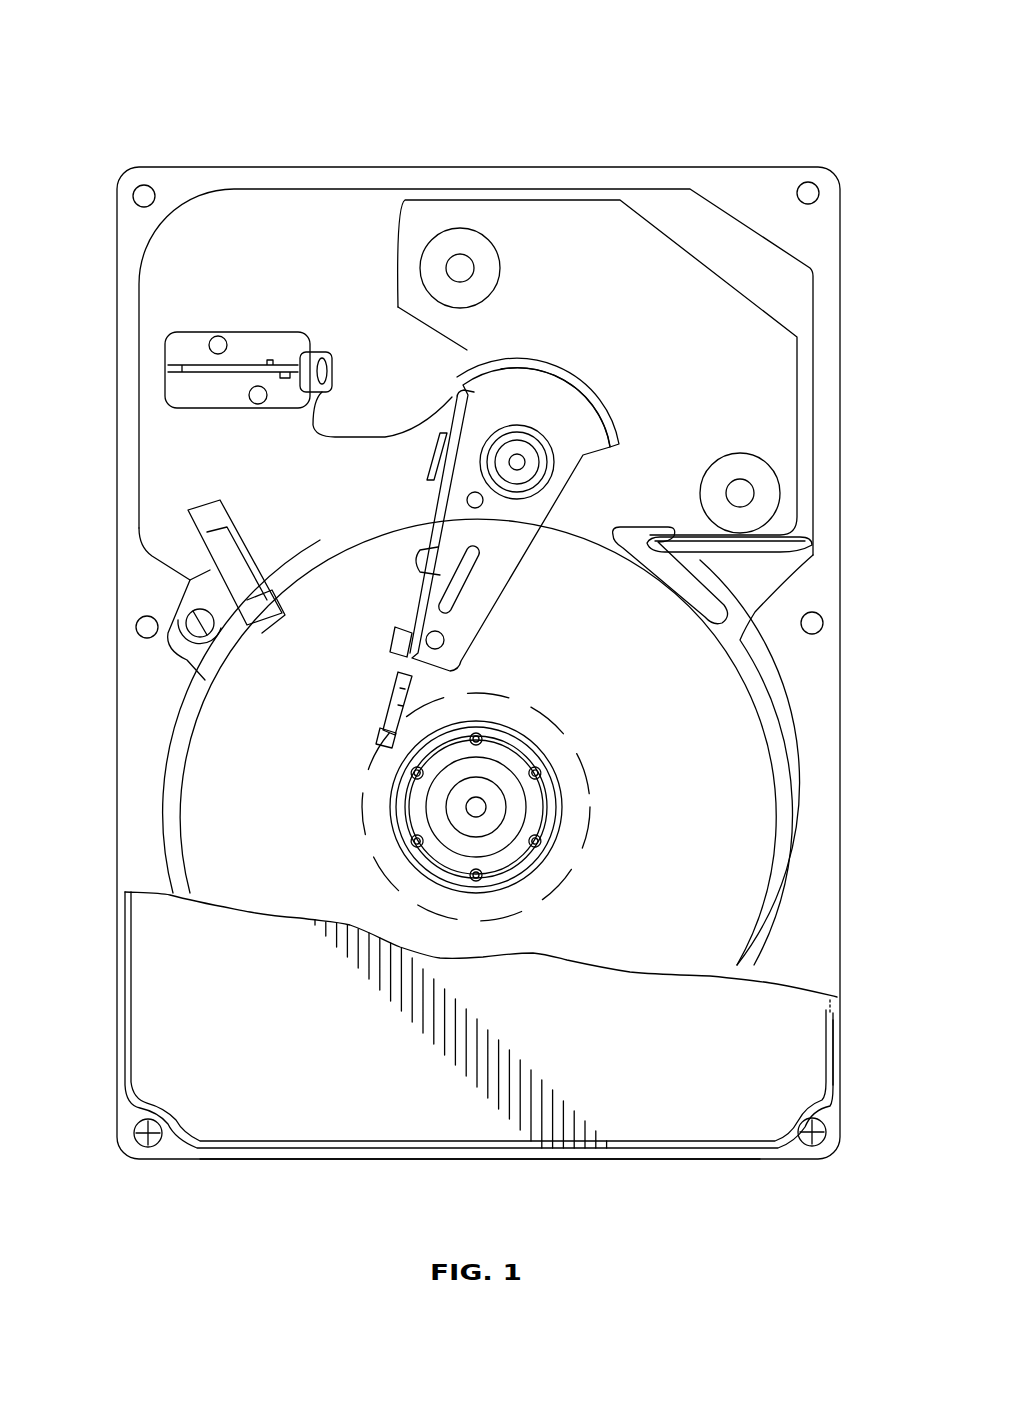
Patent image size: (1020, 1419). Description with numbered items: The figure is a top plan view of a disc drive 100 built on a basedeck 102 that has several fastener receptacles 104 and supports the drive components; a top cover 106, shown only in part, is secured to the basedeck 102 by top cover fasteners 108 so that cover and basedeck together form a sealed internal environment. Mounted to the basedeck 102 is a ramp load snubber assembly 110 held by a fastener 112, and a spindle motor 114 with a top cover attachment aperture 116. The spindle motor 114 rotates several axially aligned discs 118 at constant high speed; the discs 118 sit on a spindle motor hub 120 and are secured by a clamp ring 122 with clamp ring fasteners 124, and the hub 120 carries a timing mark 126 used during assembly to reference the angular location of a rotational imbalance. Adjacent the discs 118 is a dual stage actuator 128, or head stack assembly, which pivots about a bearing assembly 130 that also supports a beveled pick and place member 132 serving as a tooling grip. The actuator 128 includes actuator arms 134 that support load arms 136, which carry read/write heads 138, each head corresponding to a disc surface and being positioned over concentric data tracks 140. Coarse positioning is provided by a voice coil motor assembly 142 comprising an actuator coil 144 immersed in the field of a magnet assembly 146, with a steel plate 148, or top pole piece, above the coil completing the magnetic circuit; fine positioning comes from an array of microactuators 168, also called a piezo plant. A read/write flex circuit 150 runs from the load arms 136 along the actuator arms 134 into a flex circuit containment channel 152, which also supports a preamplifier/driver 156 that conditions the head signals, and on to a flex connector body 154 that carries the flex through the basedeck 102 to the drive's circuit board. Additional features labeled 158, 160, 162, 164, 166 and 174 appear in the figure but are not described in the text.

The disc drive 100 is at (432, 72).
The basedeck 102 is at (298, 250).
The fastener receptacles 104 is at (142, 188).
The top cover 106 is at (175, 980).
The top cover fasteners 108 is at (140, 1140).
The ramp load snubber assembly 110 is at (225, 520).
The fastener 112 is at (192, 618).
The spindle motor 114 is at (506, 789).
The top cover attachment aperture 116 is at (486, 796).
The discs 118 is at (700, 698).
The spindle motor hub 120 is at (510, 815).
The clamp ring 122 is at (392, 840).
The clamp ring fasteners 124 is at (410, 855).
The timing mark 126 is at (425, 830).
The dual stage actuator 128 is at (530, 542).
The bearing assembly 130 is at (600, 497).
The beveled pick and place member 132 is at (495, 472).
The actuator arms 134 is at (440, 625).
The load arms 136 is at (400, 690).
The read/write heads 138 is at (385, 740).
The data tracks 140 is at (578, 858).
The voice coil motor assembly 142 is at (768, 287).
The actuator coil 144 is at (500, 370).
The magnet assembly 146 is at (521, 240).
The steel plate 148 is at (775, 395).
The read/write flex circuit 150 is at (313, 427).
The flex circuit containment channel 152 is at (418, 556).
The flex connector body 154 is at (185, 390).
The preamplifier/driver 156 is at (430, 455).
The cover side wall 158 is at (834, 1040).
The gasket 160 is at (832, 1005).
The base bottom edge 162 is at (428, 1164).
The disk edge 164 is at (790, 750).
The filter 166 is at (770, 548).
The microactuators 168 is at (380, 666).
The pivot bearing 174 is at (522, 441).